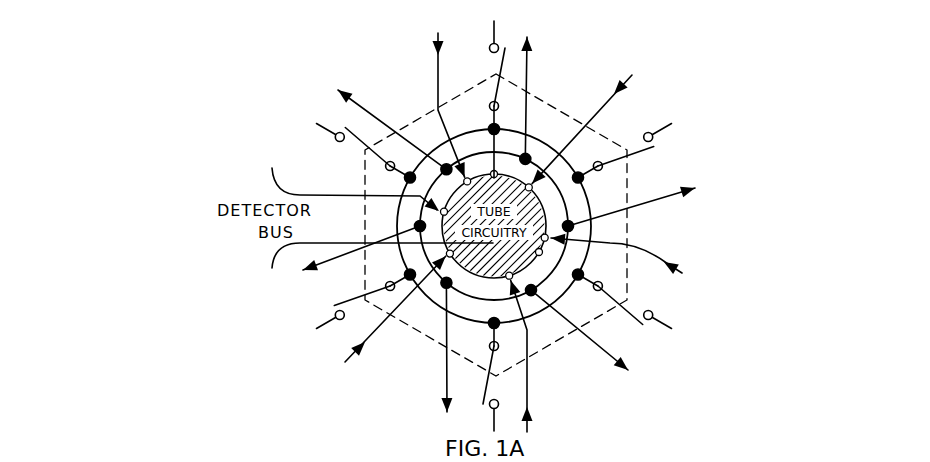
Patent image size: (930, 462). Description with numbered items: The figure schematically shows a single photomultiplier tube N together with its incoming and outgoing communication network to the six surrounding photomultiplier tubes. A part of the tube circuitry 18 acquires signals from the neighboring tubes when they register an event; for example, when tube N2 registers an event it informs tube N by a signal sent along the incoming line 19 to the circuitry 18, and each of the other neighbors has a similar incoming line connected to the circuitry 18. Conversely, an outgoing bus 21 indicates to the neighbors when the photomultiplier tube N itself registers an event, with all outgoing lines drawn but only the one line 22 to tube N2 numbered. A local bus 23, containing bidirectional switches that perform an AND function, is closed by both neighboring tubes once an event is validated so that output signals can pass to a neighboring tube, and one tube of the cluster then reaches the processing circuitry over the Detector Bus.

The circuitry 18 is at (541, 253).
The line 19 is at (593, 108).
The outgoing bus 21 is at (572, 200).
The line 22 is at (650, 203).
The local bus 23 is at (658, 128).
The photomultiplier tube N is at (512, 165).